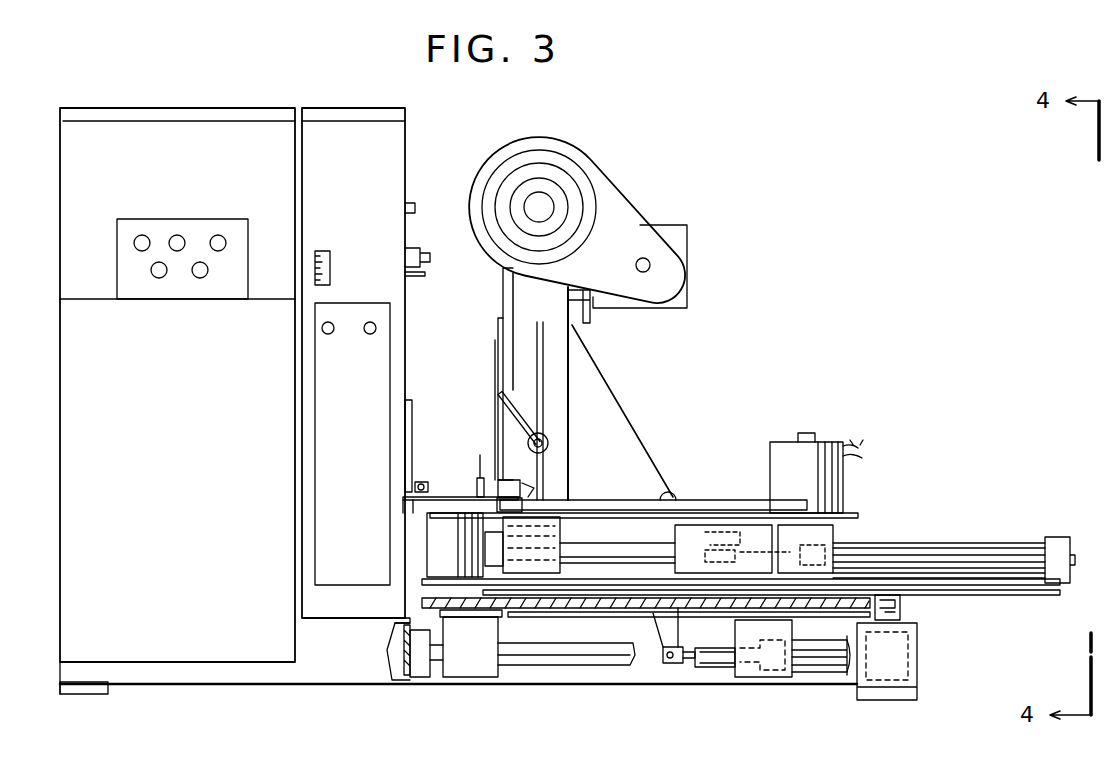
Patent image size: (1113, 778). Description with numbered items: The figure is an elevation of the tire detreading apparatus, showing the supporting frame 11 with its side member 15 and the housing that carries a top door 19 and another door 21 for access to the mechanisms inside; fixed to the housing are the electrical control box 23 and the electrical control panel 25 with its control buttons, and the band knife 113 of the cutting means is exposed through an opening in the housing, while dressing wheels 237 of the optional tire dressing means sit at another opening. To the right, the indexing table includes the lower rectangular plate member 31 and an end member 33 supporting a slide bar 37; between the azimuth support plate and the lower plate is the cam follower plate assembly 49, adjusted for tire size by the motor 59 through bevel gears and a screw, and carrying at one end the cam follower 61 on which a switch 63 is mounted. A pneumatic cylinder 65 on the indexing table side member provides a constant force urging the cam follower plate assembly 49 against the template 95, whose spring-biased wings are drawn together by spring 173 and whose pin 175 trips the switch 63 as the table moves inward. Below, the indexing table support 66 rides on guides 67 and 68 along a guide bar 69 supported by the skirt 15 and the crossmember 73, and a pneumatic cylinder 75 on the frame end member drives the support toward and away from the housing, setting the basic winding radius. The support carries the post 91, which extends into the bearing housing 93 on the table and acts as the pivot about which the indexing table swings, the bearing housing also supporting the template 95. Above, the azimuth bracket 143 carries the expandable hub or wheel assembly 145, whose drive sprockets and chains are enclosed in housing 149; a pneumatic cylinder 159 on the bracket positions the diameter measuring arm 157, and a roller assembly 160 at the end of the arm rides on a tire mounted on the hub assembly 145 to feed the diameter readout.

The supporting frame 11 is at (225, 702).
The side member 15 is at (264, 688).
The top door 19 is at (334, 110).
The door 21 is at (322, 389).
The electrical control box 23 is at (72, 320).
The electrical control panel 25 is at (148, 221).
The lower rectangular plate member 31 is at (966, 595).
The end member 33 is at (1058, 540).
The slide bar 37 is at (908, 548).
The cam follower plate assembly 49 is at (697, 509).
The motor 59 is at (788, 445).
The cam follower 61 is at (522, 500).
The switch 63 is at (522, 492).
The pneumatic cylinder 65 is at (995, 545).
The indexing table support 66 is at (586, 606).
The guide 67 is at (486, 680).
The guide 68 is at (758, 680).
The guide bar 69 is at (617, 662).
The crossmember 73 is at (420, 672).
The pneumatic cylinder 75 is at (715, 668).
The post 91 is at (418, 511).
The bearing housing 93 is at (428, 533).
The template 95 is at (438, 476).
The band knife 113 is at (414, 206).
The azimuth bracket 143 is at (560, 356).
The expandable hub or wheel assembly 145 is at (570, 132).
The housing 149 is at (626, 192).
The diameter measuring arm 157 is at (500, 416).
The pneumatic cylinder 159 is at (494, 358).
The roller assembly 160 is at (549, 445).
The spring 173 is at (440, 487).
The pin 175 is at (480, 455).
The dressing wheels 237 is at (430, 266).